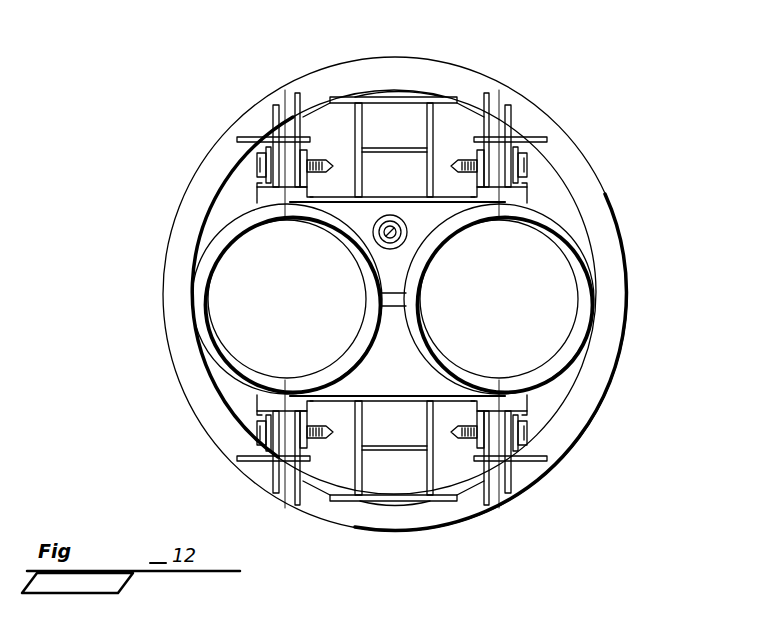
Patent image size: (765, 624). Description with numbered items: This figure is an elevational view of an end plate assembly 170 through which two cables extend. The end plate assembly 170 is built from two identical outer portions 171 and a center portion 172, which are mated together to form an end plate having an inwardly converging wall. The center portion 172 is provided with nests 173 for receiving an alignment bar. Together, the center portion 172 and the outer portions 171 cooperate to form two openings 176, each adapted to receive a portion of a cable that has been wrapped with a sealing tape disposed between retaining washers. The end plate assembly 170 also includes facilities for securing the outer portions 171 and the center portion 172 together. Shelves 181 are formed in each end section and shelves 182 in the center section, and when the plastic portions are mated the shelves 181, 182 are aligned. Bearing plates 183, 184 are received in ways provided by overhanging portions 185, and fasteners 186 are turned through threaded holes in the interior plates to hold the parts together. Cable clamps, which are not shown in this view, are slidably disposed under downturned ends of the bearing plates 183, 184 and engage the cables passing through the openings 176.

The end plate assembly 170 is at (564, 130).
The outer portions 171 is at (170, 236).
The center portion 172 is at (427, 65).
The nests 173 is at (357, 80).
The openings 176 is at (223, 290).
The shelves 181 is at (510, 197).
The shelves 182 is at (495, 158).
The bearing plate 183 is at (270, 185).
The bearing plate 184 is at (280, 470).
The overhanging portions 185 is at (265, 148).
The fasteners 186 is at (260, 155).